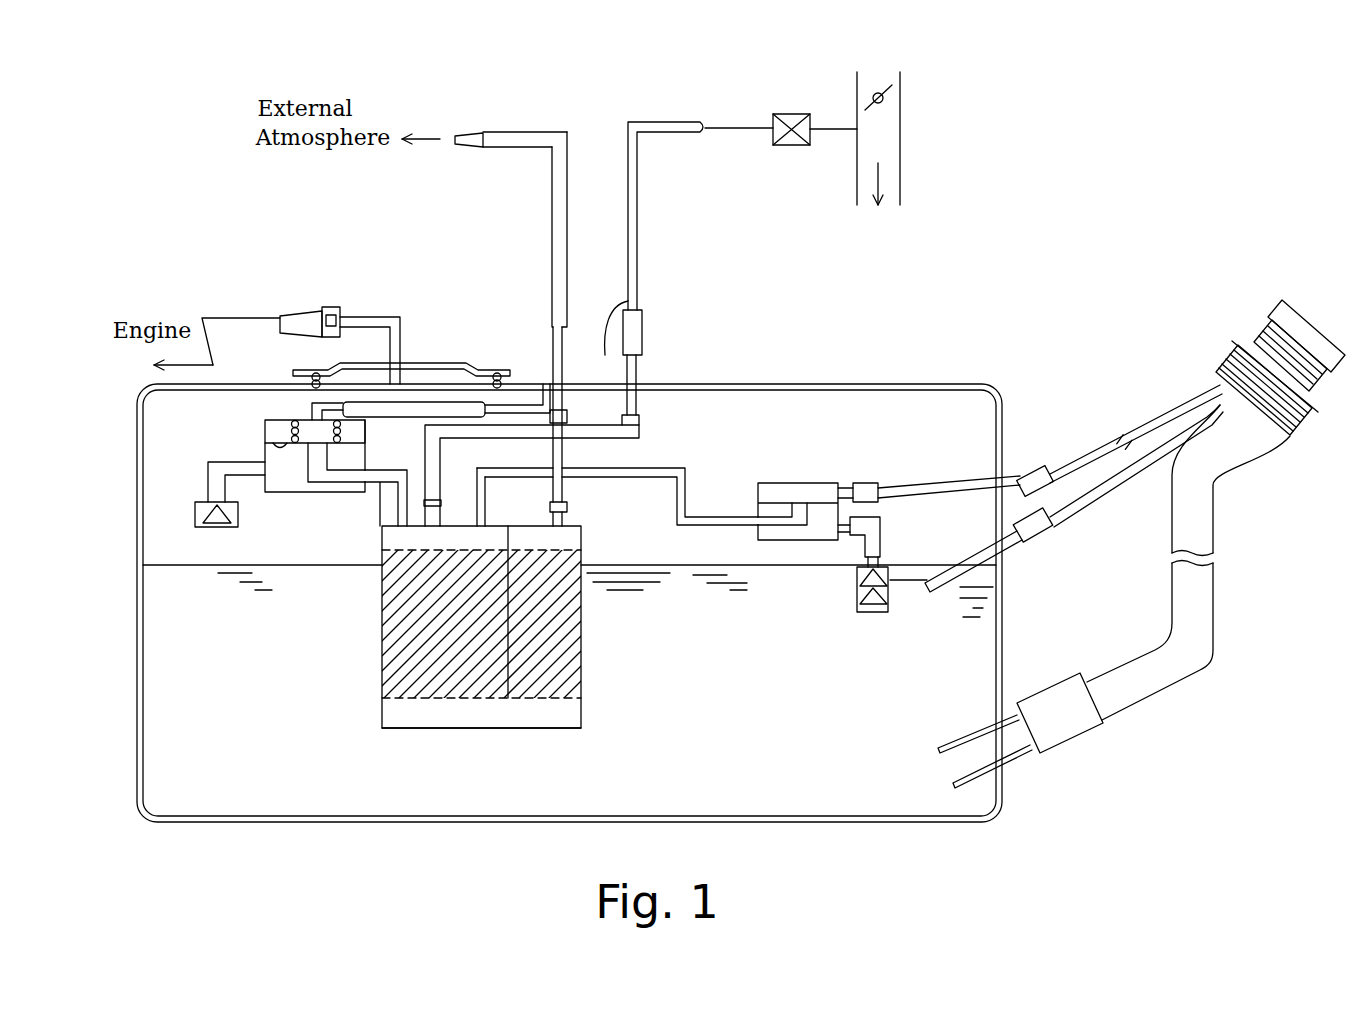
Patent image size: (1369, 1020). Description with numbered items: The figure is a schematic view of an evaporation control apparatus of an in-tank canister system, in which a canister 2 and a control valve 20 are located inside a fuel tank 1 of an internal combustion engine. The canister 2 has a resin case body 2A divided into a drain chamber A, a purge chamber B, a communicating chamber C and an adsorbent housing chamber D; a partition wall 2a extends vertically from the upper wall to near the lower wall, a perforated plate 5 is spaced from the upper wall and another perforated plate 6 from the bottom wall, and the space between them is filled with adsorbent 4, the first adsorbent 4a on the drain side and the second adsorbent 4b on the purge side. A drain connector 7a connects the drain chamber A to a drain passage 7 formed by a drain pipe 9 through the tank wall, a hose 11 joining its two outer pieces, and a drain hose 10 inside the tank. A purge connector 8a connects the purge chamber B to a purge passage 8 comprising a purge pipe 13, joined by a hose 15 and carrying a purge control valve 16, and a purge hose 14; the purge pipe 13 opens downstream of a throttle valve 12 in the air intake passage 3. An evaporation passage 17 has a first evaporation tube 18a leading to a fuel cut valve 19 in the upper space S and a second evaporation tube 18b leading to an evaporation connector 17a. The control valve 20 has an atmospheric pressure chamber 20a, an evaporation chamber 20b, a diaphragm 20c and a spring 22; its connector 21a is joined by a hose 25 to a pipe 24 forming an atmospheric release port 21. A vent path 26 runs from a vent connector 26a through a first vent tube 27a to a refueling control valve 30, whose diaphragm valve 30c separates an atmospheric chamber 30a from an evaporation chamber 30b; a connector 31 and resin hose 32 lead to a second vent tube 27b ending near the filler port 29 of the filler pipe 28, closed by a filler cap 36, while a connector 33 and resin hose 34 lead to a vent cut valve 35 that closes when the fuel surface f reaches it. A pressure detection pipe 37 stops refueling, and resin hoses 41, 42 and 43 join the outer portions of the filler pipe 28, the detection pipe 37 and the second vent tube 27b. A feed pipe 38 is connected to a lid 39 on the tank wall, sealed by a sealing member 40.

The fuel tank 1 is at (138, 731).
The canister 2 is at (378, 711).
The case body 2A is at (380, 660).
The partition wall 2a is at (515, 640).
The air intake passage 3 is at (905, 166).
The adsorbent 4 is at (482, 770).
The first adsorbent 4a is at (547, 673).
The second adsorbent 4b is at (485, 673).
The perforated plate 5 is at (588, 548).
The perforated plate 6 is at (583, 715).
The drain passage 7 is at (527, 129).
The drain connector 7a is at (570, 508).
The purge passage 8 is at (670, 120).
The purge connector 8a is at (448, 508).
The drain pipe 9 is at (565, 338).
The drain hose 10 is at (565, 454).
The hose 11 is at (550, 272).
The throttle valve 12 is at (898, 84).
The purge pipe 13 is at (625, 366).
The purge hose 14 is at (640, 392).
The hose 15 is at (645, 327).
The purge control valve 16 is at (795, 147).
The evaporation passage 17 is at (217, 460).
The evaporation connector 17a is at (392, 505).
The first evaporation tube 18a is at (208, 472).
The second evaporation tube 18b is at (368, 485).
The fuel cut valve 19 is at (195, 517).
The control valve 20 is at (273, 500).
The atmospheric pressure chamber 20a is at (262, 420).
The evaporation chamber 20b is at (297, 480).
The diaphragm 20c is at (265, 432).
The atmospheric release port 21 is at (548, 382).
The connector 21a is at (322, 402).
The spring 22 is at (412, 408).
The pipe 24 is at (538, 385).
The hose 25 is at (418, 475).
The vent path 26 is at (716, 516).
The vent connector 26a is at (490, 508).
The first vent tube 27a is at (678, 470).
The second vent tube 27b is at (958, 474).
The filler pipe 28 is at (1215, 527).
The filler port 29 is at (1228, 362).
The refueling control valve 30 is at (812, 481).
The atmospheric chamber 30a is at (790, 483).
The evaporation chamber 30b is at (818, 528).
The diaphragm valve 30c is at (766, 483).
The connector 31 is at (848, 484).
The resin hose 32 is at (870, 480).
The connector 33 is at (848, 533).
The resin hose 34 is at (893, 534).
The vent cut valve 35 is at (900, 610).
The filler cap 36 is at (1312, 328).
The pressure detection pipe 37 is at (1115, 480).
The feed pipe 38 is at (378, 313).
The lid 39 is at (438, 362).
The sealing member 40 is at (321, 380).
The resin hose 41 is at (1086, 743).
The resin hose 42 is at (1048, 532).
The resin hose 43 is at (1032, 462).
The drain chamber A is at (587, 537).
The purge chamber B is at (380, 548).
The communicating chamber C is at (398, 728).
The adsorbent housing chamber D is at (540, 597).
The upper space S is at (289, 534).
The fuel surface f is at (240, 565).